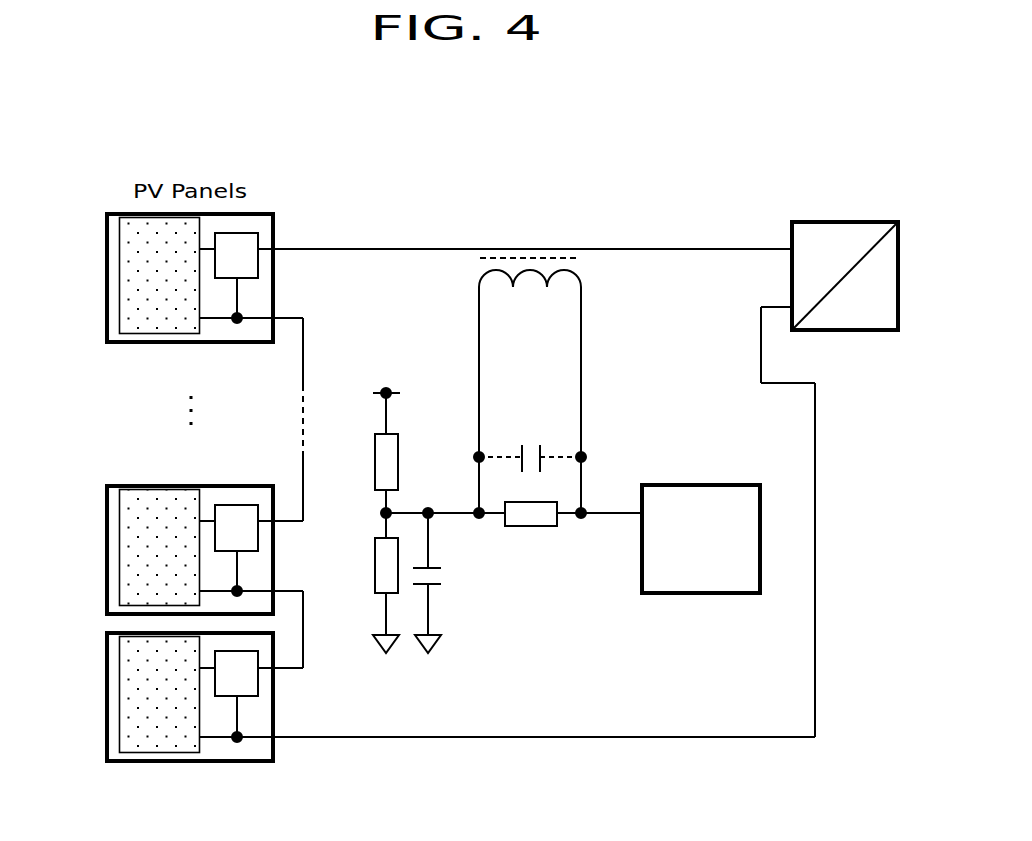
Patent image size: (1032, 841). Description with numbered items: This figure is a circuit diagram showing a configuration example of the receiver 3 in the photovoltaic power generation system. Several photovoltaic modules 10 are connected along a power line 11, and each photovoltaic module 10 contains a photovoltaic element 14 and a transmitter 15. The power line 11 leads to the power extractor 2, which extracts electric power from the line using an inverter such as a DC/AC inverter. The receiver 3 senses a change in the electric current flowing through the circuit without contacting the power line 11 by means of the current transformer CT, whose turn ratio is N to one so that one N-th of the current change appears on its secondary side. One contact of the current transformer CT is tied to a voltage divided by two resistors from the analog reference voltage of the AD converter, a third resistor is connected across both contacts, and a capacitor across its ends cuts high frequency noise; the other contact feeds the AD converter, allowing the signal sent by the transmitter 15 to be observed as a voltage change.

The power extractor 2 is at (877, 186).
The receiver 3 is at (578, 646).
The photovoltaic module 10 is at (106, 246).
The power line 11 is at (383, 249).
The photovoltaic element 14 is at (119, 304).
The transmitter 15 is at (258, 263).
The current transformer CT is at (600, 232).